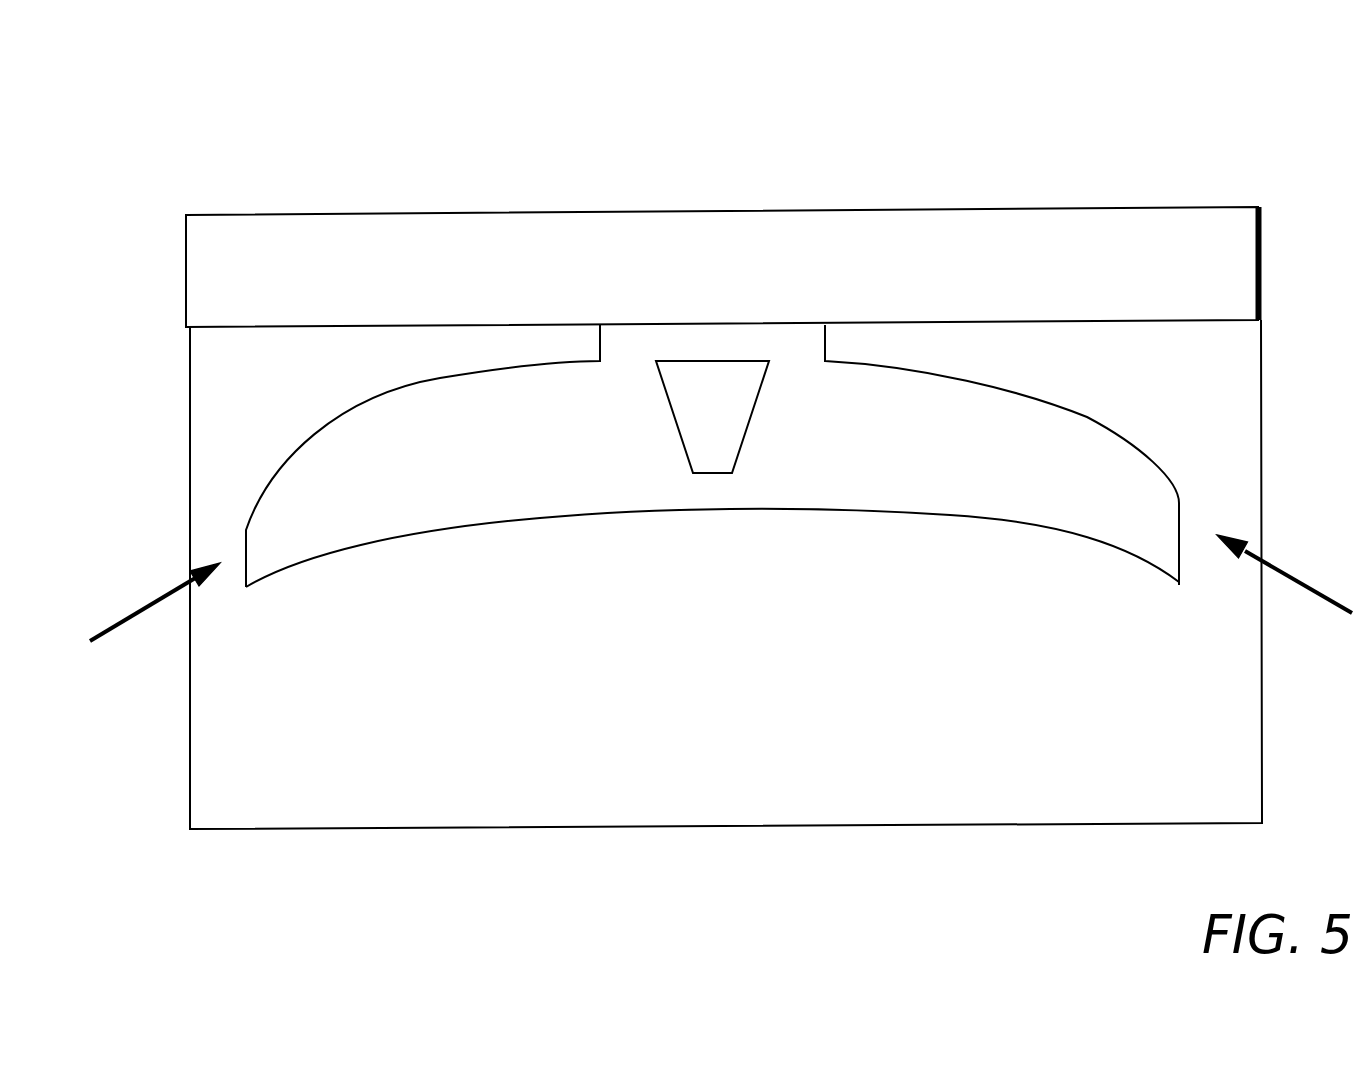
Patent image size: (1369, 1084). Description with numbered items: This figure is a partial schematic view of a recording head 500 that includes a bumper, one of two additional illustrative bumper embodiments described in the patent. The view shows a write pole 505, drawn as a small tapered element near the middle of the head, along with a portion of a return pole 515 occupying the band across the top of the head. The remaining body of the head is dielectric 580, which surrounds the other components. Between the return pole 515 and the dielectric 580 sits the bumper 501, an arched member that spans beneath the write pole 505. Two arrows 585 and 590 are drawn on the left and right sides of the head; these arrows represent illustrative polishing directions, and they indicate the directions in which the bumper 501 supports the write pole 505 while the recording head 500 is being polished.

The recording head 500 is at (705, 471).
The bumper 501 is at (452, 456).
The write pole 505 is at (695, 417).
The return pole 515 is at (898, 248).
The dielectric 580 is at (657, 732).
The arrow 585 is at (157, 598).
The arrow 590 is at (1265, 560).